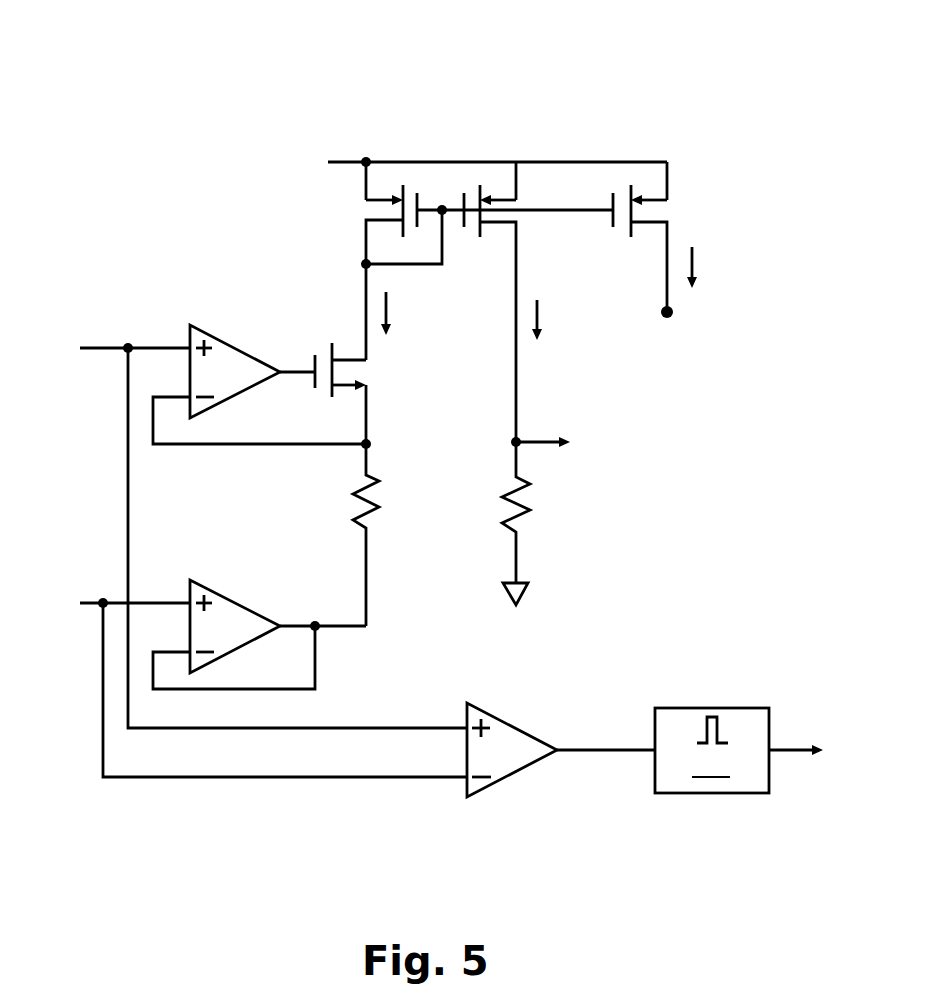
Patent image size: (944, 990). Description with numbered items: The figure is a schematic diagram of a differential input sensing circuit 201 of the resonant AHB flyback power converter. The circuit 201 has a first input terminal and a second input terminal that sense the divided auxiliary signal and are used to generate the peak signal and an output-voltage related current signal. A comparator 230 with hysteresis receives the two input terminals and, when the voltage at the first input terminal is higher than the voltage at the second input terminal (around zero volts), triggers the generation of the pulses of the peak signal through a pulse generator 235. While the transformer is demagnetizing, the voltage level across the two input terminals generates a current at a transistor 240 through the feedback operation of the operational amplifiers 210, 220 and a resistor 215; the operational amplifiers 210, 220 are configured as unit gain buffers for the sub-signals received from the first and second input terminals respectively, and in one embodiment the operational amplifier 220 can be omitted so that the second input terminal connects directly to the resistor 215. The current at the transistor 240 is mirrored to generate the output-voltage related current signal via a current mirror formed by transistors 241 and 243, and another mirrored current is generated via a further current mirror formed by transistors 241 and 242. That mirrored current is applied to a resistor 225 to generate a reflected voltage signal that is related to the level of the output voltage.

The differential input sensing circuit 201 is at (382, 58).
The operational amplifier 210 is at (235, 343).
The resistor 215 is at (343, 535).
The operational amplifier 220 is at (235, 598).
The resistor 225 is at (536, 523).
The comparator 230 is at (512, 723).
The pulse generator 235 is at (707, 708).
The transistor 240 is at (362, 356).
The transistor 241 is at (393, 227).
The transistor 242 is at (538, 313).
The transistor 243 is at (662, 251).